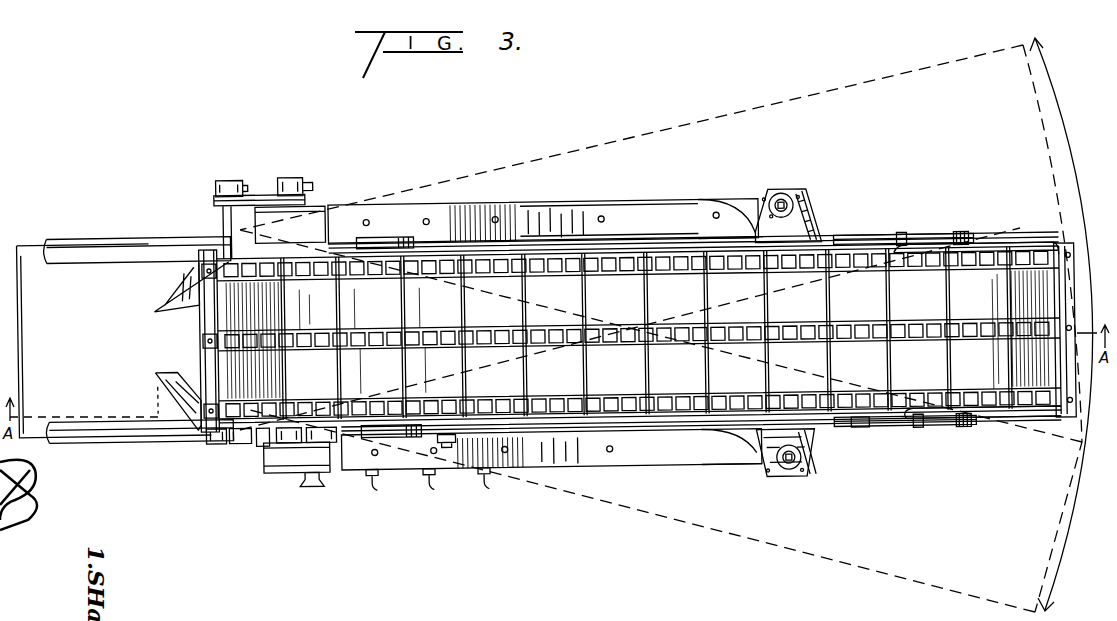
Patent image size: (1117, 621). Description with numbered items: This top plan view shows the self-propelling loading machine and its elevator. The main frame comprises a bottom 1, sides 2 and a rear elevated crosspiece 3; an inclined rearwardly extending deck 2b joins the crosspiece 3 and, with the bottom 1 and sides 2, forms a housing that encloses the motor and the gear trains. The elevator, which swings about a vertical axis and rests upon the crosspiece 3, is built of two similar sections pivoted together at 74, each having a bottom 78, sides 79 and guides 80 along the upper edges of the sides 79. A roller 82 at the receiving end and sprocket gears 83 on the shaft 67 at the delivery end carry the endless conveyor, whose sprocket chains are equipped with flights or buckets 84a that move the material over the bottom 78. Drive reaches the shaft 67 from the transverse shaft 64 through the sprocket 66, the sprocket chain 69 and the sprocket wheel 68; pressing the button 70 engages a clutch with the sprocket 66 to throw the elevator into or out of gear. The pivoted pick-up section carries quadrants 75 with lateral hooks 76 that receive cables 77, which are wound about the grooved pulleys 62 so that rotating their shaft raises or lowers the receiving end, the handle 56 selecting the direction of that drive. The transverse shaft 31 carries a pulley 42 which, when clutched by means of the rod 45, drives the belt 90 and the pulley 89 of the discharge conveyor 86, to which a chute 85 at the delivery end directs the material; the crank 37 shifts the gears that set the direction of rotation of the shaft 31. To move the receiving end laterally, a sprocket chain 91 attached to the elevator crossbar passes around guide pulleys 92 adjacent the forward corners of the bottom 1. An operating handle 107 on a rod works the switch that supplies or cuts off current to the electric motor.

The bottom 1 is at (800, 222).
The sides 2 is at (588, 206).
The deck 2b is at (530, 212).
The rear elevated crosspiece 3 is at (322, 208).
The transverse shaft 31 is at (296, 478).
The crank 37 is at (430, 484).
The pulley 42 is at (295, 180).
The rod 45 is at (318, 490).
The handle 56 is at (376, 482).
The grooved pulleys 62 is at (400, 238).
The transverse shaft 64 is at (290, 446).
The sprocket 66 is at (328, 450).
The shaft 67 is at (237, 446).
The sprocket wheel 68 is at (212, 442).
The sprocket chain 69 is at (256, 448).
The button 70 is at (444, 440).
The pivot 74 is at (858, 432).
The quadrants 75 is at (937, 240).
The lateral hooks 76 is at (900, 234).
The cables 77 is at (664, 236).
The bottom 78 is at (639, 334).
The sides 79 is at (700, 248).
The guides 80 is at (612, 246).
The roller 82 is at (1040, 250).
The sprocket gears 83 is at (210, 262).
The flights or buckets 84a is at (402, 376).
The chute 85 is at (160, 372).
The conveyor 86 is at (95, 240).
The pulley 89 is at (247, 182).
The drive belt 90 is at (266, 196).
The sprocket chain 91 is at (800, 196).
The guide pulleys 92 is at (786, 194).
The operating handle 107 is at (486, 480).